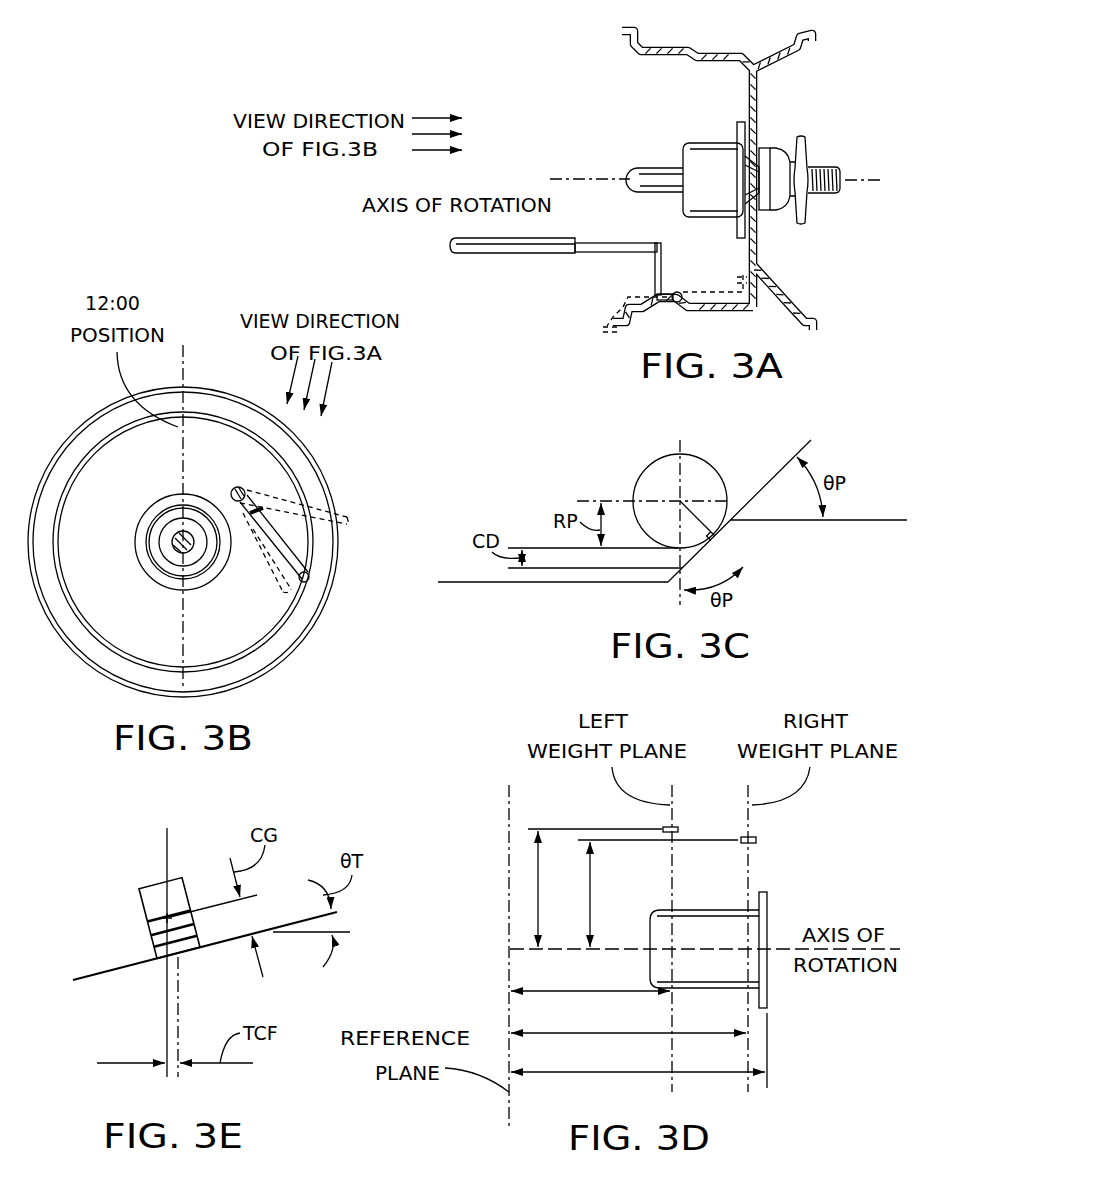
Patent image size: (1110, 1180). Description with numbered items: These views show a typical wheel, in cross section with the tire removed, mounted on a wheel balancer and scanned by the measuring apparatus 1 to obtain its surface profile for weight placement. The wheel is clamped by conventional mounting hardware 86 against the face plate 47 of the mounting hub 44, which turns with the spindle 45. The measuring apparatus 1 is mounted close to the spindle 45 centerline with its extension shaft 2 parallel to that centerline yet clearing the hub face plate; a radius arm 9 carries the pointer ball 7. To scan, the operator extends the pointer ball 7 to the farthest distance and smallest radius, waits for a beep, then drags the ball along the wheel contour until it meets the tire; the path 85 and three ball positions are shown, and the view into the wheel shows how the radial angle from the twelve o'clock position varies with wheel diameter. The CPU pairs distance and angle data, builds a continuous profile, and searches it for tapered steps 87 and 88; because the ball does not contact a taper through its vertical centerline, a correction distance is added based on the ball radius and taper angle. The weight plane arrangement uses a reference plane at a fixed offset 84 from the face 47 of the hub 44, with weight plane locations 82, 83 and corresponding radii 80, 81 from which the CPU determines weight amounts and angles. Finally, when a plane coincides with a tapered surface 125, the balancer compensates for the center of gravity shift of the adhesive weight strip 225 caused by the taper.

In FIG. 3A, the measuring apparatus 1 is at (573, 271).
In FIG. 3B, the measuring apparatus 1 is at (290, 540).
In FIG. 3A, the extension shaft 2 is at (642, 254).
In FIG. 3A, the pointer ball 7 is at (678, 291).
In FIG. 3C, the pointer ball 7 is at (723, 482).
In FIG. 3A, the radius arm 9 is at (661, 264).
In FIG. 3A, the mounting hub 44 is at (705, 142).
In FIG. 3D, the mounting hub 44 is at (732, 990).
In FIG. 3A, the spindle 45 is at (660, 166).
In FIG. 3A, the face plate 47 is at (740, 121).
In FIG. 3D, the face plate 47 is at (768, 905).
In FIG. 3A, the path 85 is at (723, 291).
In FIG. 3A, the mounting hardware 86 is at (790, 126).
In FIG. 3A, the step 87 is at (688, 57).
In FIG. 3C, the step 87 is at (734, 532).
In FIG. 3A, the step 88 is at (749, 63).
In FIG. 3D, the weight radius 80 is at (538, 897).
In FIG. 3D, the weight radius 81 is at (590, 897).
In FIG. 3D, the weight plane location 82 is at (545, 991).
In FIG. 3D, the weight plane location 83 is at (545, 1033).
In FIG. 3D, the fixed offset 84 is at (545, 1072).
In FIG. 3E, the tapered surface 125 is at (117, 968).
In FIG. 3E, the adhesive weight strip 225 is at (145, 888).